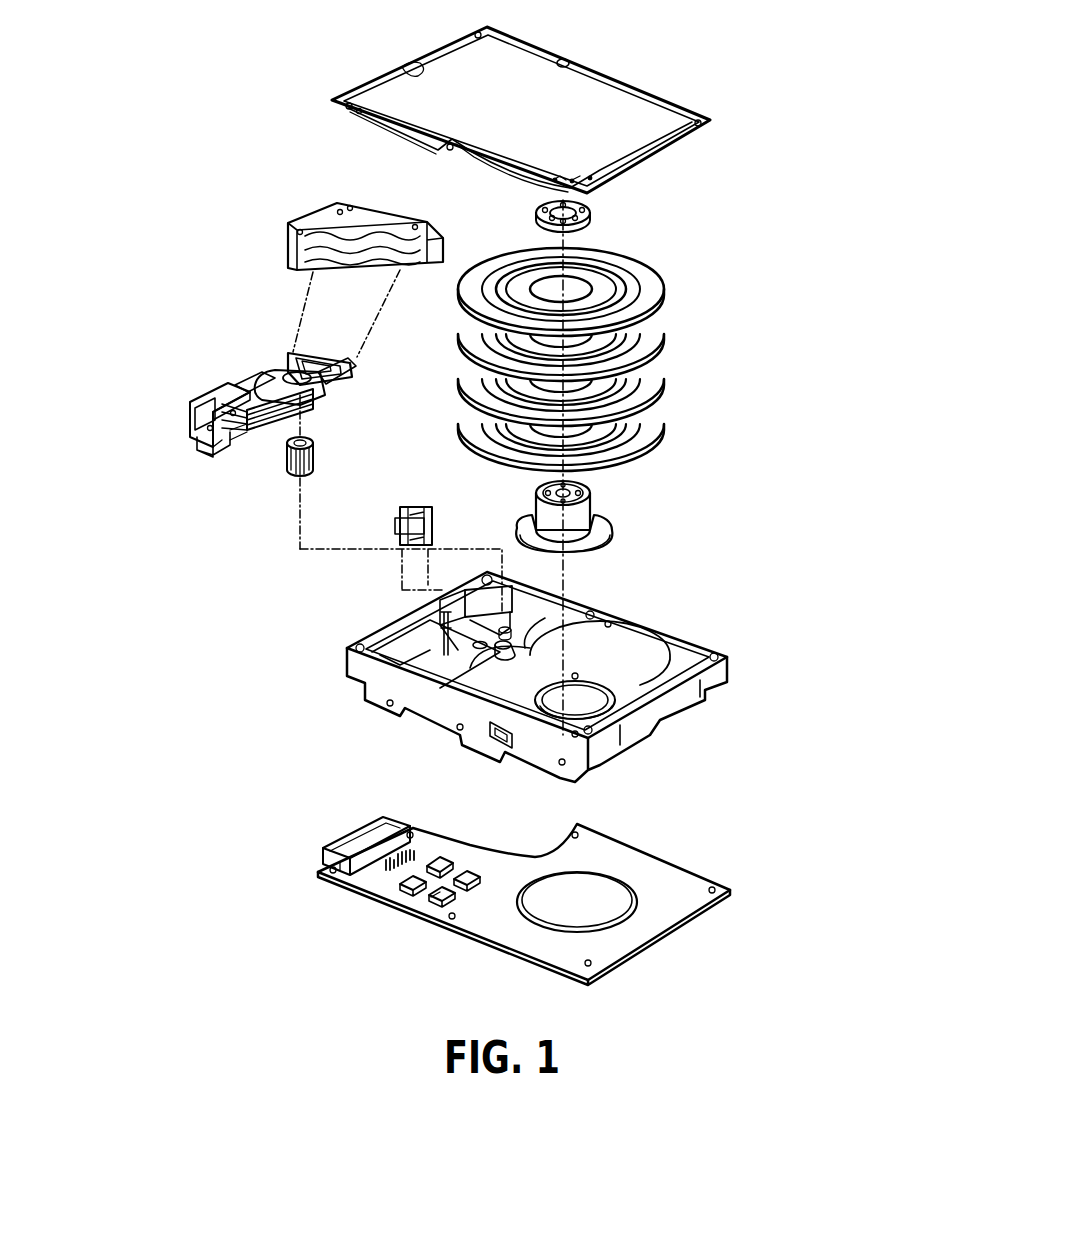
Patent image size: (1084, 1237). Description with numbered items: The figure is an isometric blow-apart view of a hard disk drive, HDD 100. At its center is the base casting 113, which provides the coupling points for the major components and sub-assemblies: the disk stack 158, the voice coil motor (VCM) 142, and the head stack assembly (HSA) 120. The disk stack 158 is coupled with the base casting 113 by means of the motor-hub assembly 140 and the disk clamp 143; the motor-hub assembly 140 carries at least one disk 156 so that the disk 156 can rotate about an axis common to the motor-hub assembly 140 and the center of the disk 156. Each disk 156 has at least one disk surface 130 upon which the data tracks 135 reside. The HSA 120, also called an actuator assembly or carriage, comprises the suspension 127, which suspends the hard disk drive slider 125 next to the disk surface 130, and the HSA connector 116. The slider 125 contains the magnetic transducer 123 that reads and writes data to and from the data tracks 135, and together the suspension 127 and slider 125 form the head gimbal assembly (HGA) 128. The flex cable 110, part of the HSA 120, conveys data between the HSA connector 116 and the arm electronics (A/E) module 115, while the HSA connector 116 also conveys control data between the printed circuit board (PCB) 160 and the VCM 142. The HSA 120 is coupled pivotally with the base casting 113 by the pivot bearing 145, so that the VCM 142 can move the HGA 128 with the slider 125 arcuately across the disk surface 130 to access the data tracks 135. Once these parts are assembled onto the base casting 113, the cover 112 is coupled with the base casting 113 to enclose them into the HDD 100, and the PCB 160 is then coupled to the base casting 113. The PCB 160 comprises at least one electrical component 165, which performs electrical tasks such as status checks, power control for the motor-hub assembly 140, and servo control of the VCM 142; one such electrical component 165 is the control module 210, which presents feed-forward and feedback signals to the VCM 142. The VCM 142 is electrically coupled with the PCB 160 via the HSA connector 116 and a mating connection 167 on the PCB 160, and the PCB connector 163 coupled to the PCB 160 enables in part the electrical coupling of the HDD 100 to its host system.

The HDD 100 is at (722, 940).
The flex cable 110 is at (258, 395).
The cover 112 is at (603, 118).
The base casting 113 is at (360, 670).
The arm electronics (A/E) module 115 is at (288, 372).
The HSA connector 116 is at (212, 442).
The head stack assembly (HSA) 120 is at (185, 378).
The magnetic transducer 123 is at (201, 508).
The hard disk drive slider 125 is at (248, 440).
The suspension 127 is at (250, 388).
The head gimbal assembly (HGA) 128 is at (280, 450).
The disk surface 130 is at (676, 310).
The data tracks 135 is at (515, 263).
The motor-hub assembly 140 is at (612, 522).
The voice coil motor (VCM) 142 is at (289, 212).
The disk clamp 143 is at (532, 214).
The pivot bearing 145 is at (298, 480).
The disk 156 is at (466, 428).
The disk stack 158 is at (717, 575).
The printed circuit board (PCB) 160 is at (354, 886).
The PCB connector 163 is at (363, 839).
The electrical component 165 is at (437, 892).
The mating connection 167 is at (390, 867).
The control module 210 is at (409, 944).